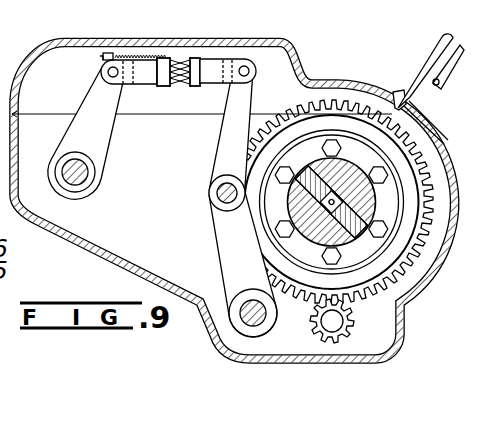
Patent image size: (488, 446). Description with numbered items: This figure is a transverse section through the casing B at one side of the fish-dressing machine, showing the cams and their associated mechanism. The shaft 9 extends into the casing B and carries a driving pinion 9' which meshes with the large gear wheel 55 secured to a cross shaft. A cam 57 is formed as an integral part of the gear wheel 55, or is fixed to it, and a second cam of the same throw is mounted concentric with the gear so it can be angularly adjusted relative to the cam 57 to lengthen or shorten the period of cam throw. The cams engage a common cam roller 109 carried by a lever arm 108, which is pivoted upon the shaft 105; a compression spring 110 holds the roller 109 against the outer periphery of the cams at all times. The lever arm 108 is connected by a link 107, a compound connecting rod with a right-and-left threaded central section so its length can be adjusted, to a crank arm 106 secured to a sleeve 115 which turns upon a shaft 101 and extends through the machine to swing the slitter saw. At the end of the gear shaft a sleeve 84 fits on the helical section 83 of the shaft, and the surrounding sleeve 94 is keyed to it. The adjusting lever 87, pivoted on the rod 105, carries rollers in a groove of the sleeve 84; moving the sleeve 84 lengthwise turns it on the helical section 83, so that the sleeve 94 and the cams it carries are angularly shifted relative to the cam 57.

The casing B is at (101, 257).
The gear wheel 55 is at (300, 112).
The cam 57 is at (345, 295).
The sleeve 84 is at (352, 224).
The helical section 83 is at (320, 213).
The surrounding sleeve 94 is at (348, 199).
The lever arm 108 is at (222, 163).
The cam roller 109 is at (217, 199).
The shaft 105 is at (245, 316).
The shaft 9 is at (322, 321).
The driving pinion 9' is at (348, 327).
The crank arm 106 is at (100, 131).
The shaft 101 is at (77, 181).
The sleeve 115 is at (90, 178).
The link 107 is at (158, 85).
The compression spring 110 is at (196, 30).
The adjusting lever 87 is at (421, 68).